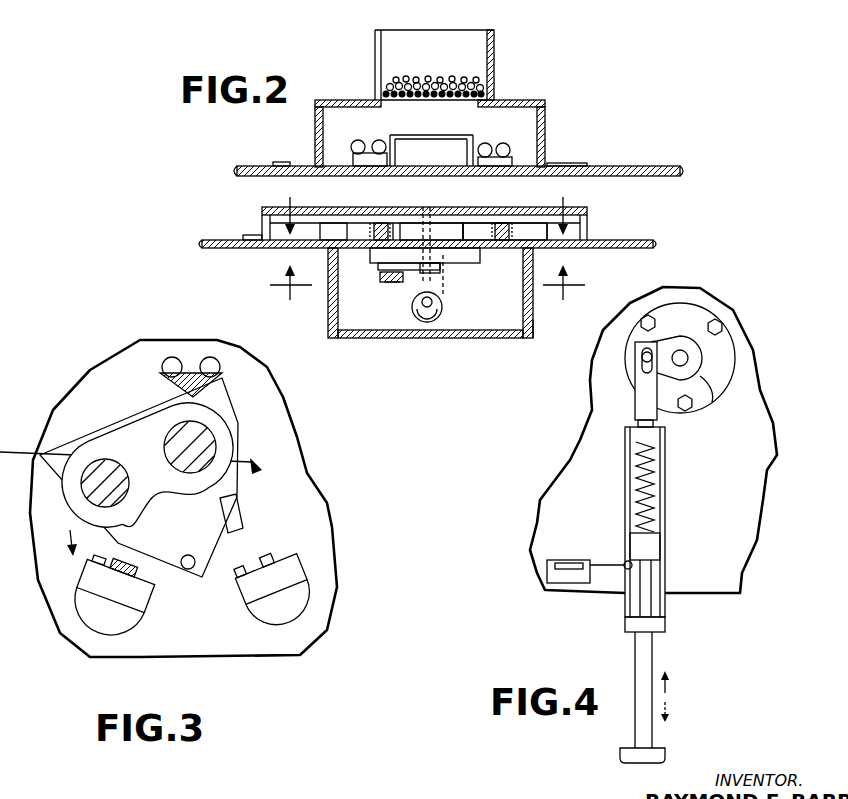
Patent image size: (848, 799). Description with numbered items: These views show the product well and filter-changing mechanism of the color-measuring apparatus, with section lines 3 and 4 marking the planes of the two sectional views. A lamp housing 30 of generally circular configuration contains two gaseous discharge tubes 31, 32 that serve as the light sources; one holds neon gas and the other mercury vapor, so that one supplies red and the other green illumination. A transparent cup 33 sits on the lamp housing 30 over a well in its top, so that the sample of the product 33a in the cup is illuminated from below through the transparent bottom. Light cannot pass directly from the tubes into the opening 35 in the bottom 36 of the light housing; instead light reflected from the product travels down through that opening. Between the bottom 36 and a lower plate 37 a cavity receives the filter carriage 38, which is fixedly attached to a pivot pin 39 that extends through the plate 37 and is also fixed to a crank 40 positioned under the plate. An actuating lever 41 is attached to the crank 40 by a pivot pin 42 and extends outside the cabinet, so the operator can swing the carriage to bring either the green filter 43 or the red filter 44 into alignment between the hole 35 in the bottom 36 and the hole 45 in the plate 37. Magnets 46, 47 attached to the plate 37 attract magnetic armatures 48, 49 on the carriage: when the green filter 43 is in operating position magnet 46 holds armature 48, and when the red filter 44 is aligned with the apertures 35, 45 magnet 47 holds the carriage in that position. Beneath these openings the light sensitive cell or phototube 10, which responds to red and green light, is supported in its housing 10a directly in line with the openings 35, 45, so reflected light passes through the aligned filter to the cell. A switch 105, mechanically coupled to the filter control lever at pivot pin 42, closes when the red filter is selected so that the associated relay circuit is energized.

In FIG. 2, the section line 3— 3 is at (426, 202).
In FIG. 2, the section line 4— 4 is at (427, 296).
In FIG. 2, the light sensitive cell 10 is at (445, 322).
In FIG. 2, the housing 10a is at (533, 322).
In FIG. 2, the lamp housing 30 is at (545, 136).
In FIG. 2, the gaseous discharge tube 31 is at (353, 142).
In FIG. 2, the gaseous discharge tube 32 is at (380, 141).
In FIG. 2, the transparent cup 33 is at (494, 74).
In FIG. 2, the sample of the product 33a is at (455, 64).
In FIG. 2, the opening 35 is at (420, 214).
In FIG. 2, the bottom 36 is at (337, 206).
In FIG. 2, the plate 37 is at (270, 249).
In FIG. 3, the plate 37 is at (287, 524).
In FIG. 4, the plate 37 is at (729, 484).
In FIG. 2, the filter carriage 38 is at (517, 215).
In FIG. 3, the filter carriage 38 is at (142, 453).
In FIG. 2, the pivot pin 39 is at (430, 230).
In FIG. 3, the pivot pin 39 is at (190, 570).
In FIG. 4, the pivot pin 39 is at (690, 358).
In FIG. 2, the crank 40 is at (456, 268).
In FIG. 4, the crank 40 is at (712, 400).
In FIG. 2, the actuating lever 41 is at (382, 278).
In FIG. 4, the actuating lever 41 is at (636, 398).
In FIG. 2, the pivot pin 42 is at (400, 284).
In FIG. 4, the pivot pin 42 is at (642, 358).
In FIG. 3, the green filter 43 is at (82, 486).
In FIG. 3, the red filter 44 is at (208, 442).
In FIG. 2, the hole 45 is at (460, 285).
In FIG. 2, the magnet 46 is at (364, 230).
In FIG. 3, the magnet 46 is at (126, 622).
In FIG. 2, the magnet 47 is at (500, 245).
In FIG. 3, the magnet 47 is at (300, 600).
In FIG. 3, the magnetic armature 48 is at (120, 553).
In FIG. 3, the magnetic armature 49 is at (240, 524).
In FIG. 4, the switch 105 is at (556, 577).